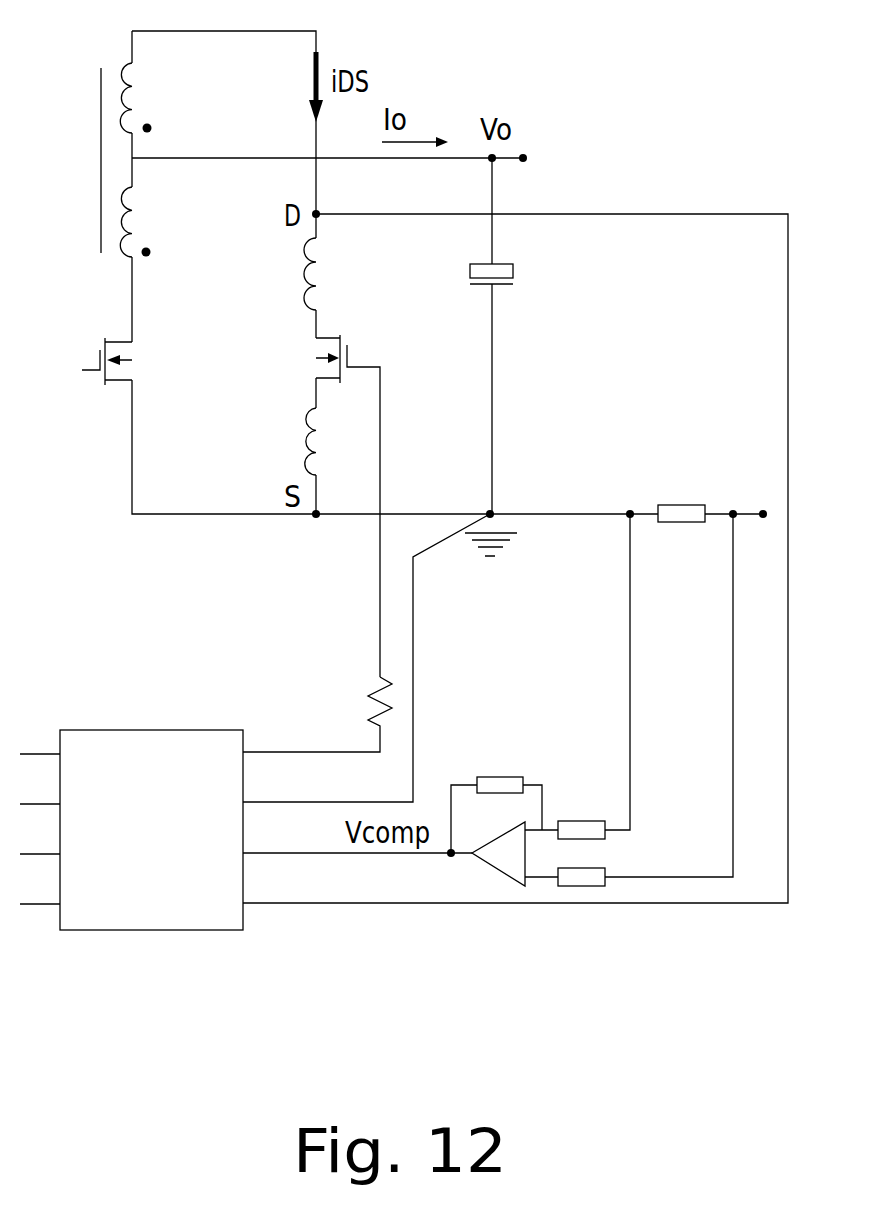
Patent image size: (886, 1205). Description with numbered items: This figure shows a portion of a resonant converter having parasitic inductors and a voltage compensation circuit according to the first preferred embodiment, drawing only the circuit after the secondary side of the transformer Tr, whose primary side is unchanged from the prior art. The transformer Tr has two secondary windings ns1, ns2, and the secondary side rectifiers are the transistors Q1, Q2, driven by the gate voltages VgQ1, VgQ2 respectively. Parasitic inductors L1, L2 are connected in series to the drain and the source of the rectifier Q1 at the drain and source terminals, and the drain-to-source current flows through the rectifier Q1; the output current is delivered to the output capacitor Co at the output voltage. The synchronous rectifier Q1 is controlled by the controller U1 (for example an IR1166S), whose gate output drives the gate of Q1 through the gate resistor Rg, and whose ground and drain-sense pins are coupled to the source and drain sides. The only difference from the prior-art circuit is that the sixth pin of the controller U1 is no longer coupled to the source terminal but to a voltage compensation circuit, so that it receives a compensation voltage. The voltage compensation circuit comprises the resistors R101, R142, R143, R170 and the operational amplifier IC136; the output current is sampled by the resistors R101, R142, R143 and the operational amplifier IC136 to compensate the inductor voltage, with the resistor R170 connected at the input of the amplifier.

The transformer Tr is at (108, 143).
The secondary winding ns2 is at (166, 98).
The secondary winding ns1 is at (166, 222).
The parasitic inductor L1 is at (328, 274).
The parasitic inductor L2 is at (328, 441).
The output capacitor Co is at (471, 271).
The secondary side rectifier Q1 is at (325, 506).
The secondary side rectifier Q2 is at (127, 361).
The gate voltage VgQ1 is at (385, 340).
The gate voltage VgQ2 is at (62, 355).
The resistor Rg is at (317, 704).
The resistor R101 is at (682, 494).
The resistor R142 is at (589, 676).
The resistor R143 is at (496, 815).
The resistor R170 is at (645, 700).
The operational amplifier IC136 is at (400, 861).
The controller U1 is at (148, 803).